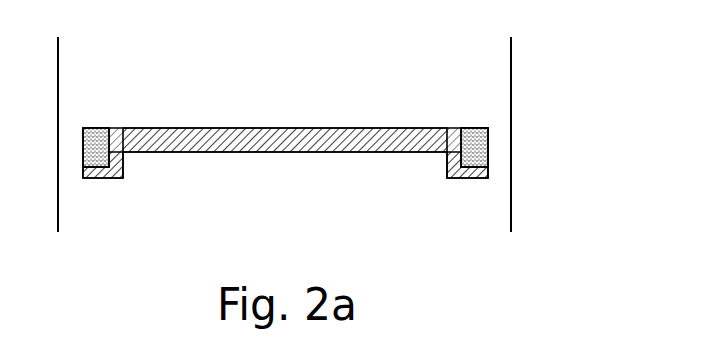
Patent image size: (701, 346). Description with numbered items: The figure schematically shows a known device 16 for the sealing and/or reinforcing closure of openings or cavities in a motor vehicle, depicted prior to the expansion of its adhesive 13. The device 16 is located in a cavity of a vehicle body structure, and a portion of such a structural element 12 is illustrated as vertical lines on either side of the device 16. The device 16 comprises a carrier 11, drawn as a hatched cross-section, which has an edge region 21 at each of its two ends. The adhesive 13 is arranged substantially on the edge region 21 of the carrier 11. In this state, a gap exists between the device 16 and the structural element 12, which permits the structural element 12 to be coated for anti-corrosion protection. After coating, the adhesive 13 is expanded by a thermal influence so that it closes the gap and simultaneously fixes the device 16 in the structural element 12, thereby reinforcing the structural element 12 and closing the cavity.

The carrier 11 is at (278, 140).
The structural element 12 is at (512, 200).
The adhesive 13 is at (96, 126).
The device 16 is at (280, 107).
The edge region 21 is at (98, 176).